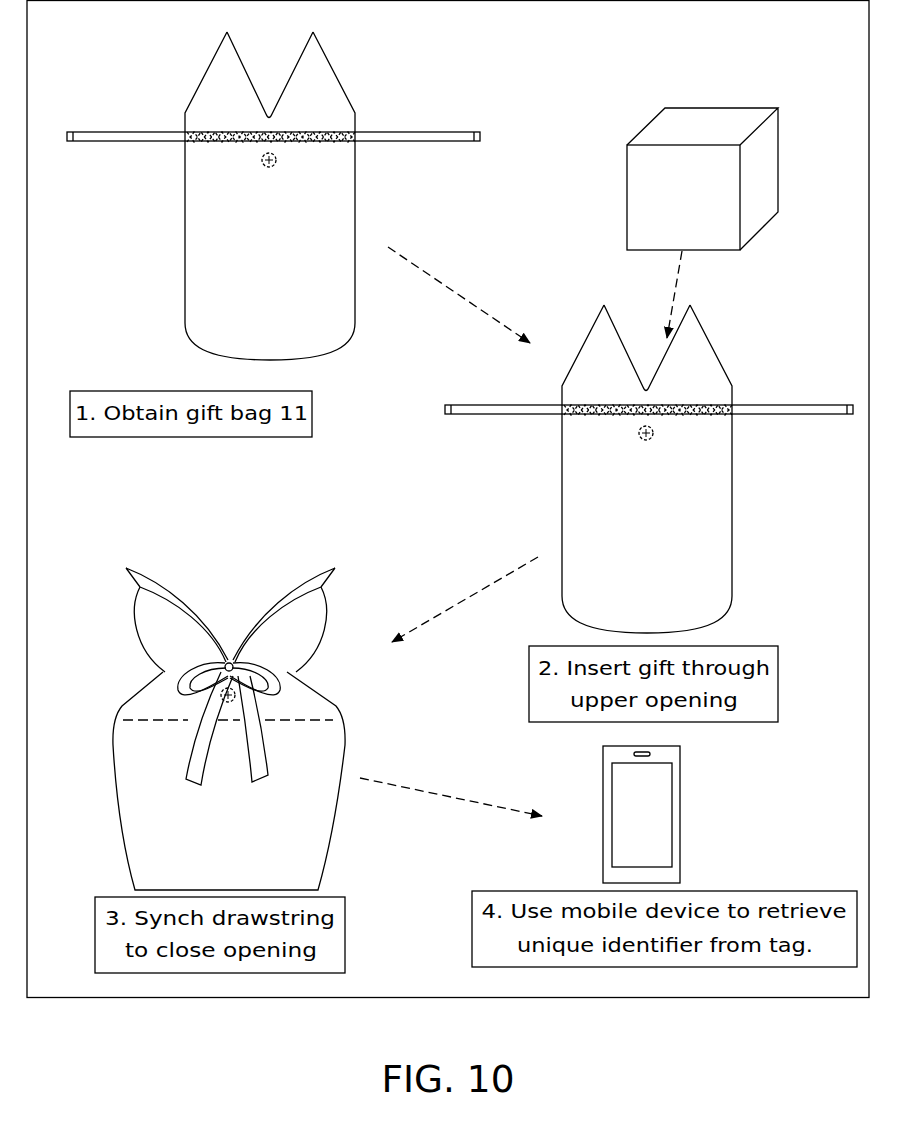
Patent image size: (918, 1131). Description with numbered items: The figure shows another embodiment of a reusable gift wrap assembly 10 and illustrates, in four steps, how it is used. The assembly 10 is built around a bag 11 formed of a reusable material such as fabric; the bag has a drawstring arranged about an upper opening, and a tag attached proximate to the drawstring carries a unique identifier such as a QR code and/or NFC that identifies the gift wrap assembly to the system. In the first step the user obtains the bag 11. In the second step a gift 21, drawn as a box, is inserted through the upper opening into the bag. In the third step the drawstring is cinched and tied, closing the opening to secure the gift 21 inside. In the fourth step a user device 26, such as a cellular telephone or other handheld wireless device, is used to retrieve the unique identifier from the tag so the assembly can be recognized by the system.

The gift wrap assembly 10 is at (157, 88).
The gift bag 11 is at (240, 180).
The gift 21 is at (677, 207).
The user device 26 is at (632, 816).